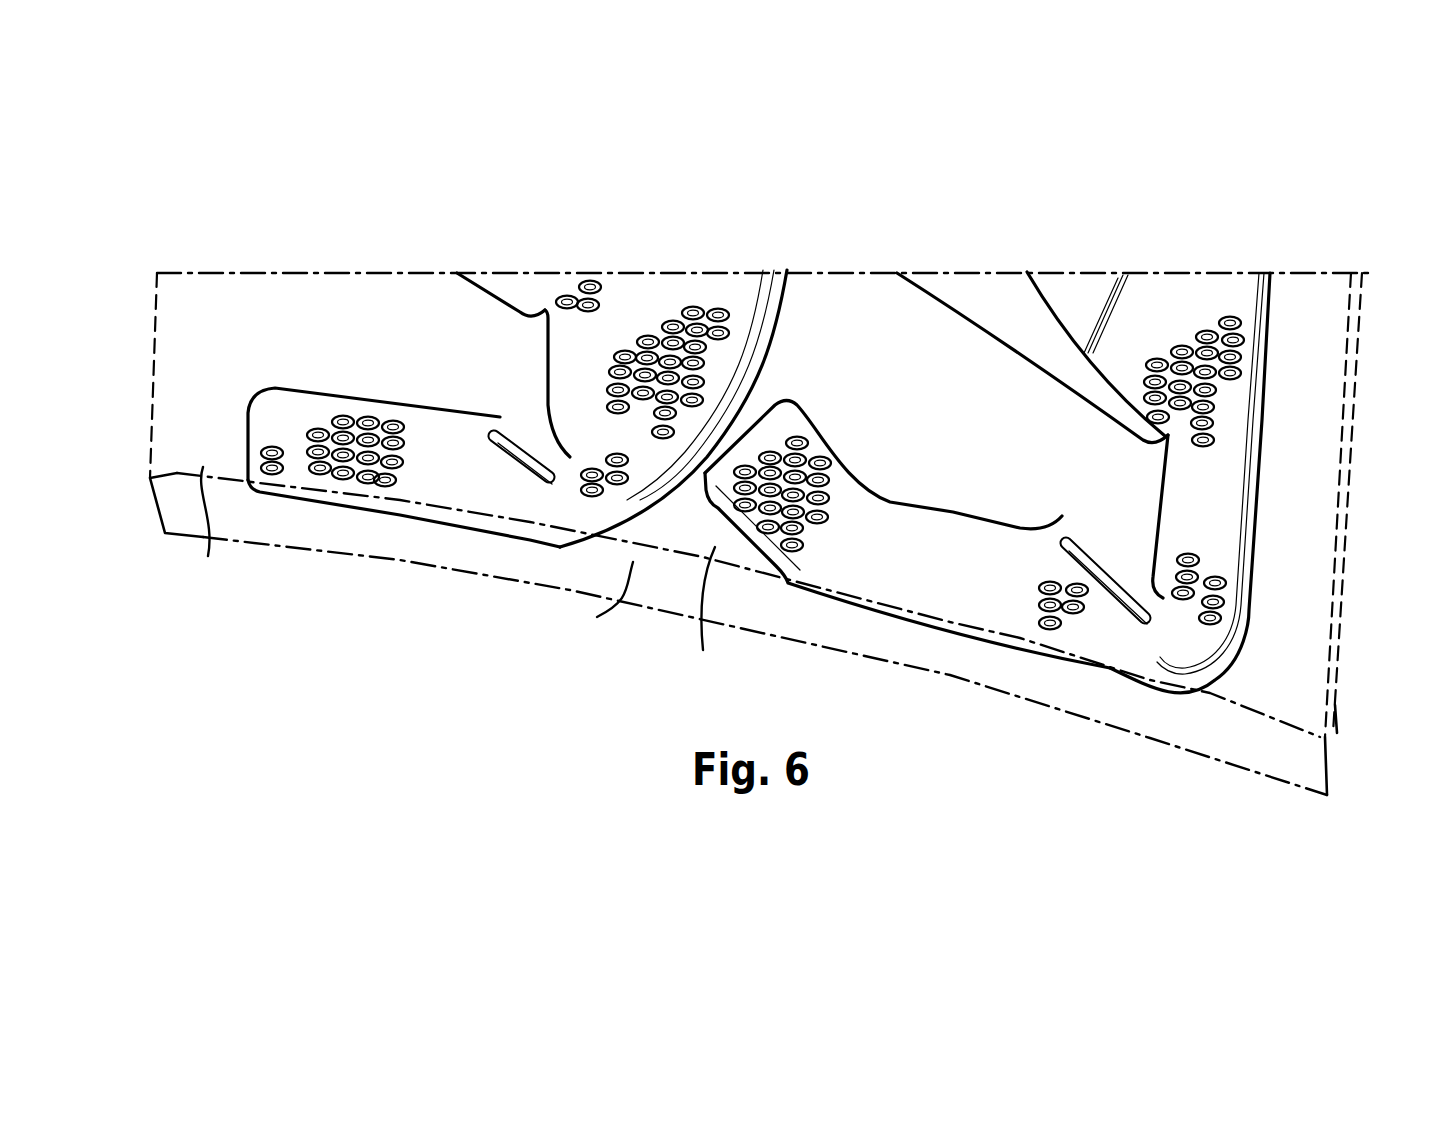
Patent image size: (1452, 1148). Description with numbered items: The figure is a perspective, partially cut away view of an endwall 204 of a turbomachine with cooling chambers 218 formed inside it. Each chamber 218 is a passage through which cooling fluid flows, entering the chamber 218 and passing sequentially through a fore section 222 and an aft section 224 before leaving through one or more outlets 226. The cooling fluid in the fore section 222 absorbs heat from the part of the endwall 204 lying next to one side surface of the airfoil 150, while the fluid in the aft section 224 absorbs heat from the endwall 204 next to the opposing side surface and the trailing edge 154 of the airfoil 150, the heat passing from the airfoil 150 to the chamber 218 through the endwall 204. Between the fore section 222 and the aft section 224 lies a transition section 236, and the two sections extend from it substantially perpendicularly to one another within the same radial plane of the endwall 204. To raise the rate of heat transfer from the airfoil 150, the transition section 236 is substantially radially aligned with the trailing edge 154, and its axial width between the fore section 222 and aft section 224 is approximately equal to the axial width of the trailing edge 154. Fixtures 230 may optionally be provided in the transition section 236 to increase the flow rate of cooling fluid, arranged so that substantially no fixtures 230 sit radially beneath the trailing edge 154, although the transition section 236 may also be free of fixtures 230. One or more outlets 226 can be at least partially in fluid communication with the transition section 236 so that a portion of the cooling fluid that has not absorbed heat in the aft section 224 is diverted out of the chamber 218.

The airfoil 150 is at (494, 268).
The trailing edge 154 is at (530, 312).
The endwall 204 is at (665, 618).
The chamber 218 is at (753, 262).
The fore section 222 is at (656, 327).
The aft section 224 is at (423, 477).
The outlet 226 is at (457, 574).
The fixtures 230 is at (316, 437).
The transition section 236 is at (474, 425).